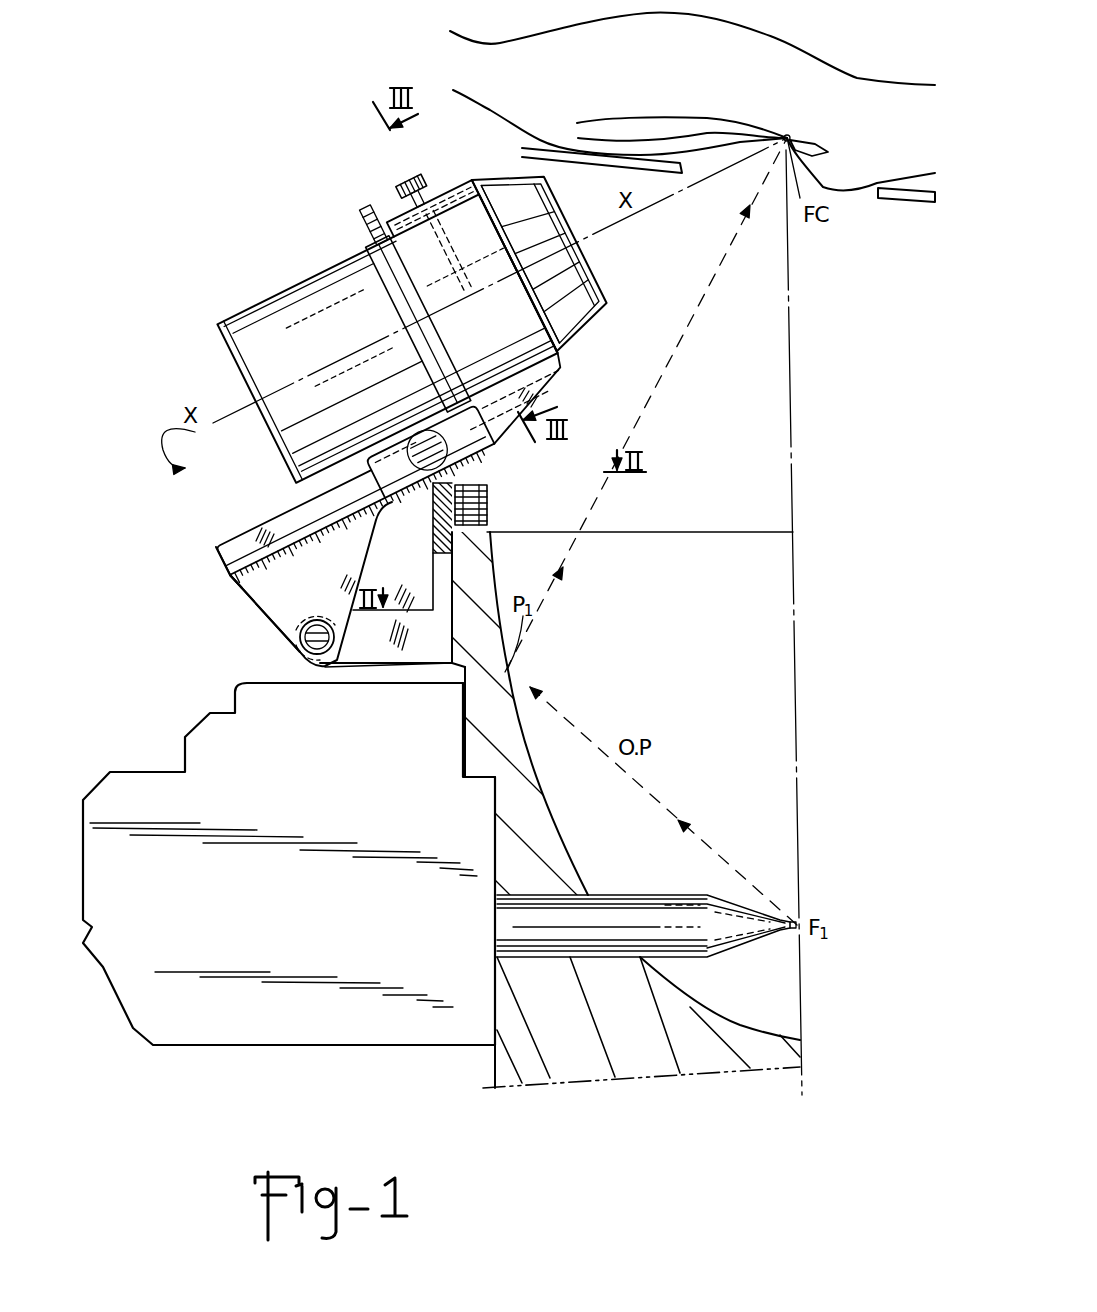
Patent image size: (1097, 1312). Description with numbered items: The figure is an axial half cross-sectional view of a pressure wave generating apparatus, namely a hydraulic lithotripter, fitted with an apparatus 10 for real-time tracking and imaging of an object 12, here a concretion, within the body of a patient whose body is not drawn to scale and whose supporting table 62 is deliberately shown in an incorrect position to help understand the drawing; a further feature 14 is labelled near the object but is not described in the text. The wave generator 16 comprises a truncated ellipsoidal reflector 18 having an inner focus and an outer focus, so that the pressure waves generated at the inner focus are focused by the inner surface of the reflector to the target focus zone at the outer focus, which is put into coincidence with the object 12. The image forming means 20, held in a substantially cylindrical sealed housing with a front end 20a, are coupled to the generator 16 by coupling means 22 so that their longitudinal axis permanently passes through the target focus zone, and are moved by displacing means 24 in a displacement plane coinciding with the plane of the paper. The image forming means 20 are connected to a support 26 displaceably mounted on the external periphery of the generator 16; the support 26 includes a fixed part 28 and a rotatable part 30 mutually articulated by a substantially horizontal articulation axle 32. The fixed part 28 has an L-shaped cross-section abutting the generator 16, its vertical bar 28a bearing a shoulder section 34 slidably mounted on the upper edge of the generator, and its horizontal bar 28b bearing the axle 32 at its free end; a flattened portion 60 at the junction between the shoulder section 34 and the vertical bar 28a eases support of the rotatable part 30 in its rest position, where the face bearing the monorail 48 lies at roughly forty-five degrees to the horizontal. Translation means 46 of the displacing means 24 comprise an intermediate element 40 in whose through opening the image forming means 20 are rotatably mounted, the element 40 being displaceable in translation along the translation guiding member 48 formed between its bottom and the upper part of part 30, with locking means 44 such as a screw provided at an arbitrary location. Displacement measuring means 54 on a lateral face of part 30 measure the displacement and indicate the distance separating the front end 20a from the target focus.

The apparatus for real-time tracking and imaging 10 is at (273, 268).
The object 12 is at (787, 133).
The target feature 14 is at (800, 142).
The wave generator 16 is at (693, 1047).
The truncated ellipsoidal reflector 18 is at (492, 545).
The image forming means 20 is at (240, 322).
The front end of the image forming means 20a is at (610, 300).
The coupling means 22 is at (572, 368).
The displacing means 24 is at (301, 477).
The support 26 is at (431, 667).
The fixed part 28 is at (347, 667).
The vertical bar 28a is at (433, 522).
The horizontal bar 28b is at (378, 668).
The rotatable part 30 is at (277, 623).
The articulation axle 32 is at (310, 656).
The shoulder section 34 is at (470, 487).
The intermediate element 40 is at (465, 215).
The locking means 44 is at (395, 184).
The translation means 46 is at (225, 585).
The translation guiding member 48 is at (230, 543).
The displacement measuring means 54 is at (287, 553).
The flattened portion 60 is at (423, 440).
The table 62 is at (660, 157).